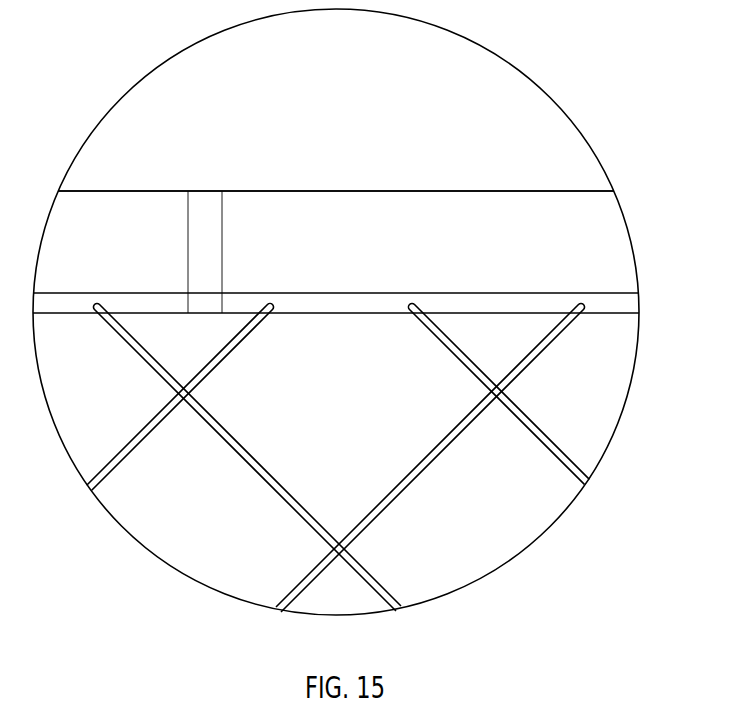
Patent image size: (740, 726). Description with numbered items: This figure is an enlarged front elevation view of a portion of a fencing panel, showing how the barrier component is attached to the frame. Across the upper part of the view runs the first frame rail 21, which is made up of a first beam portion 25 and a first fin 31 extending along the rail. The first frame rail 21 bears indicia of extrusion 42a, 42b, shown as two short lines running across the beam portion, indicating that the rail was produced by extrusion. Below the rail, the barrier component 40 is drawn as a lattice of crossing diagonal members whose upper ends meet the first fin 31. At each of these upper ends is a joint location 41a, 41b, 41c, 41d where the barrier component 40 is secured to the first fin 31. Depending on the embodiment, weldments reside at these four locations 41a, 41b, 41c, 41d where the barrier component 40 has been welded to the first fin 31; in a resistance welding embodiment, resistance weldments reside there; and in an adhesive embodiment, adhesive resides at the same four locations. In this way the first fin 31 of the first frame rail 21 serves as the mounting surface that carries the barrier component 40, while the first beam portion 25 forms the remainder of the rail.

The first frame rail 21 is at (524, 207).
The first beam portion 25 is at (437, 202).
The first fin 31 is at (623, 305).
The barrier component 40 is at (308, 387).
The weldment location 41a is at (94, 305).
The weldment location 41b is at (272, 300).
The weldment location 41c is at (410, 302).
The weldment location 41d is at (581, 302).
The indicia of extrusion 42a is at (188, 250).
The indicia of extrusion 42b is at (223, 238).